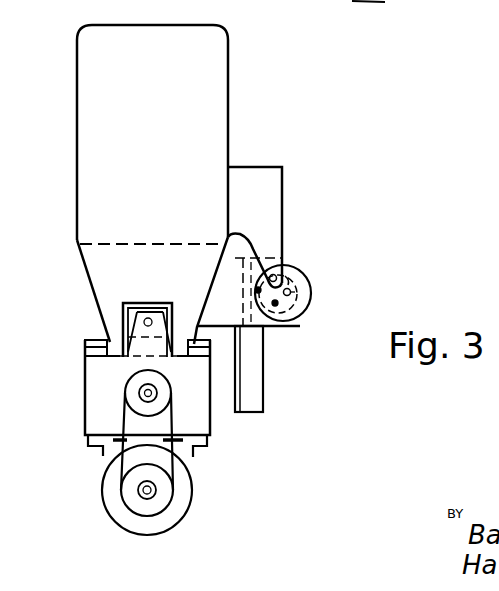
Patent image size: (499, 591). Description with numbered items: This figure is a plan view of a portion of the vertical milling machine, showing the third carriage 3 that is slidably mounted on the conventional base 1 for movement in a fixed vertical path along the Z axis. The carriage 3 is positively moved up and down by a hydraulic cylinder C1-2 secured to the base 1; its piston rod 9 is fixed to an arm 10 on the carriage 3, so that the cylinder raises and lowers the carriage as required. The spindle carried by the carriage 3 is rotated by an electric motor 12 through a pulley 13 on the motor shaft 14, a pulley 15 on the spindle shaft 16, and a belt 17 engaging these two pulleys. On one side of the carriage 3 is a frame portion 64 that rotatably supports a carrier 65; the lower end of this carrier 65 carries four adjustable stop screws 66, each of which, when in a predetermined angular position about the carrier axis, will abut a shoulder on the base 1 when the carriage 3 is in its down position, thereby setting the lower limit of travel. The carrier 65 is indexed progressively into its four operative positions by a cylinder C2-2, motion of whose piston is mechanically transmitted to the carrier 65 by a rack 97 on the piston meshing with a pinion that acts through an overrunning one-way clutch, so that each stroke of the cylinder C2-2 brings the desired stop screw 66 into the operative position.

The base 1 is at (77, 157).
The carriage 3 is at (92, 375).
The piston rod 9 is at (128, 319).
The arm 10 is at (166, 328).
The electric motor 12 is at (192, 507).
The pulley 13 is at (125, 503).
The motor shaft 14 is at (147, 497).
The pulley 15 is at (125, 393).
The spindle shaft 16 is at (157, 392).
The belt 17 is at (110, 447).
The frame portion 64 is at (310, 297).
The carrier 65 is at (298, 272).
The adjustable stop screws 66 is at (297, 316).
The rack 97 is at (278, 328).
The section line C1-2 is at (133, 303).
The section line C2-2 is at (264, 392).